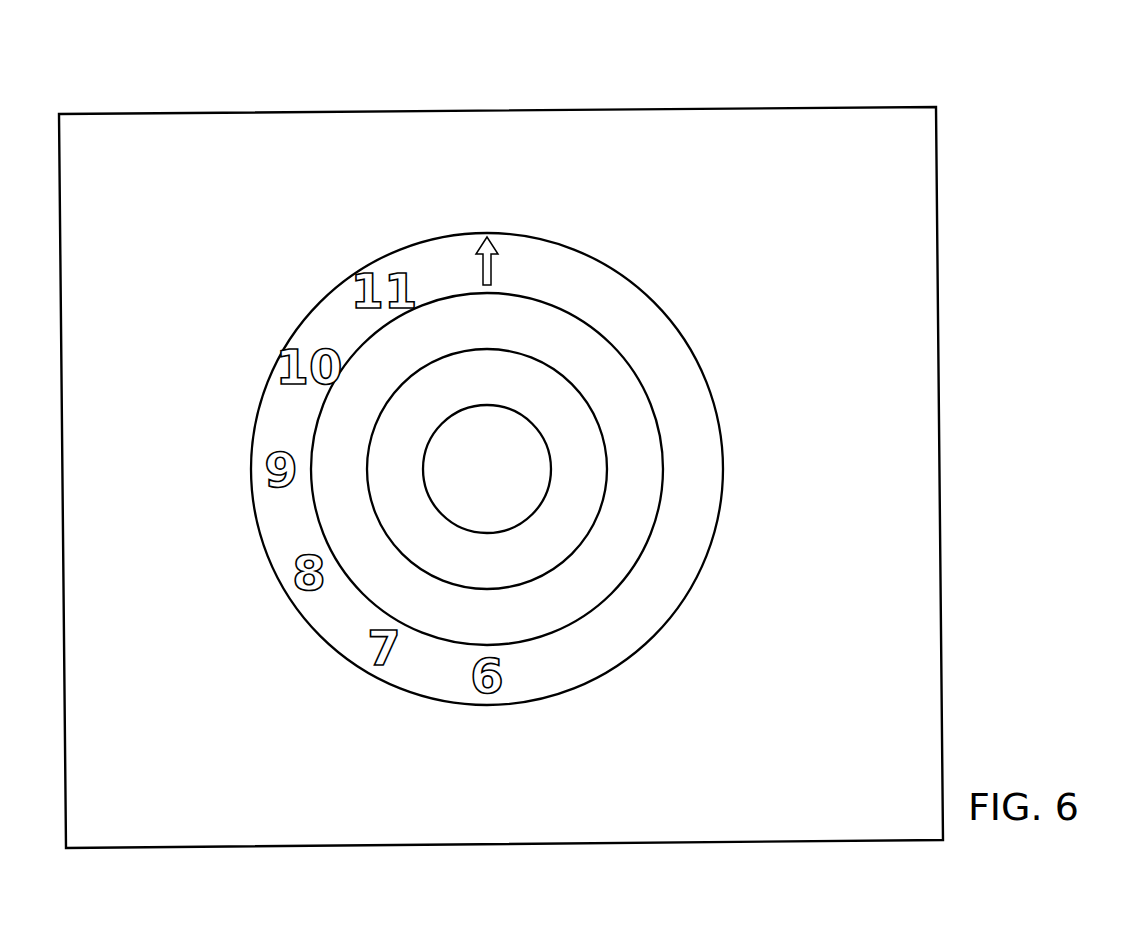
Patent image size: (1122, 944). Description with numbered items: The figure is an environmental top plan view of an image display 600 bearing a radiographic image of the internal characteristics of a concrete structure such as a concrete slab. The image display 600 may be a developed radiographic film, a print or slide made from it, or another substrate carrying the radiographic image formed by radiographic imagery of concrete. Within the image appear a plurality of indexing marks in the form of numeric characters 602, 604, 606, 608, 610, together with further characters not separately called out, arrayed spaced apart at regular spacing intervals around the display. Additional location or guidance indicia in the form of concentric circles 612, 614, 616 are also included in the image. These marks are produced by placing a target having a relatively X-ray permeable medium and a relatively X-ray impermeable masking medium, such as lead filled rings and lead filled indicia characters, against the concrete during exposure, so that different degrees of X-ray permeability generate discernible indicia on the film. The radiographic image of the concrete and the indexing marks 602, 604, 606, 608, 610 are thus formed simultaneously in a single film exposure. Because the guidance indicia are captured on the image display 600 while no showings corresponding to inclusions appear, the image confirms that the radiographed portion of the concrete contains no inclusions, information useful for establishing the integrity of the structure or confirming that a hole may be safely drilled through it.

The image display 600 is at (663, 86).
The numeric character 602 is at (593, 278).
The numeric character 604 is at (678, 352).
The numeric character 606 is at (703, 457).
The numeric character 608 is at (678, 573).
The numeric character 610 is at (603, 653).
The concentric circle 612 is at (462, 588).
The concentric circle 614 is at (530, 643).
The concentric circle 616 is at (437, 510).